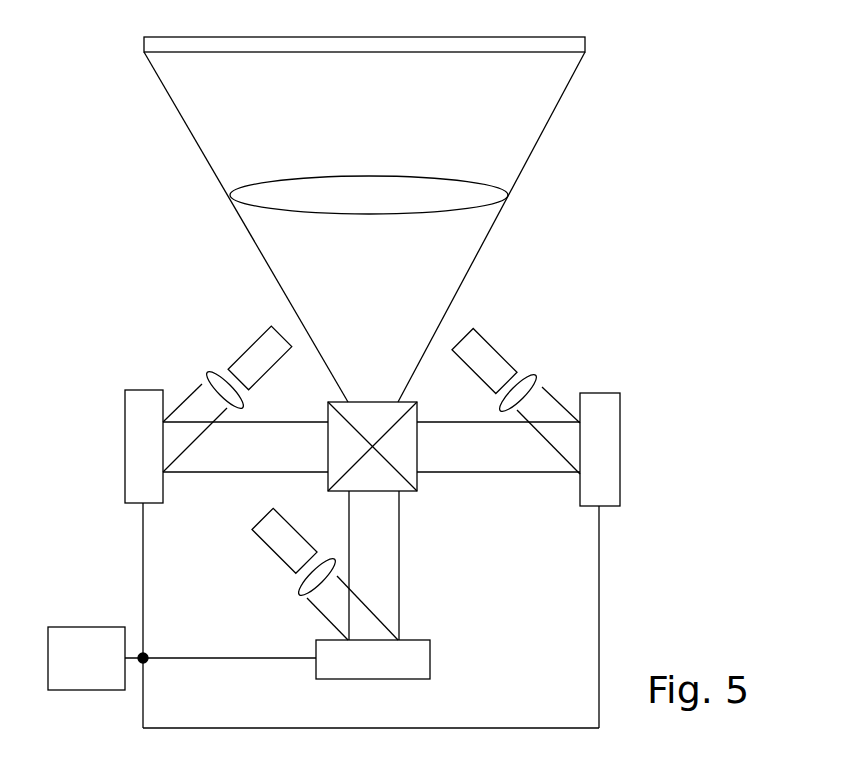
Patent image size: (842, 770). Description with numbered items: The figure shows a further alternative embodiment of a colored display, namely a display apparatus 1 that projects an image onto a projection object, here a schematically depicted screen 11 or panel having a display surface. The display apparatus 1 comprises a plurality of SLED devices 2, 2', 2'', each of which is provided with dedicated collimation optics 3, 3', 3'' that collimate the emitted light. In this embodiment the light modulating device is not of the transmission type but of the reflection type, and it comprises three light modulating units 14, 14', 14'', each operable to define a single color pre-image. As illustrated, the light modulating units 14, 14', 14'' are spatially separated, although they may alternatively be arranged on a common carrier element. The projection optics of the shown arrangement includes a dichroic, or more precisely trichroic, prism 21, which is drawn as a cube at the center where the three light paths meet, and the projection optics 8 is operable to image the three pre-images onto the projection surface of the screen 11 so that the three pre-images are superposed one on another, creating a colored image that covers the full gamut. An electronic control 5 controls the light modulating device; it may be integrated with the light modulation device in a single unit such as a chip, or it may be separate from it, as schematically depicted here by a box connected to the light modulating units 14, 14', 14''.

The display apparatus 1 is at (618, 251).
The SLED device 2 is at (246, 330).
The SLED device 2' is at (526, 352).
The SLED device 2'' is at (244, 551).
The collimation optics 3 is at (193, 366).
The collimation optics 3' is at (566, 374).
The collimation optics 3'' is at (276, 599).
The electronic control 5 is at (73, 653).
The projection optics 8 is at (428, 190).
The screen 11 is at (565, 45).
The light modulating unit 14 is at (114, 429).
The light modulating unit 14' is at (650, 438).
The light modulating unit 14'' is at (419, 643).
The dichroic prism 21 is at (403, 440).